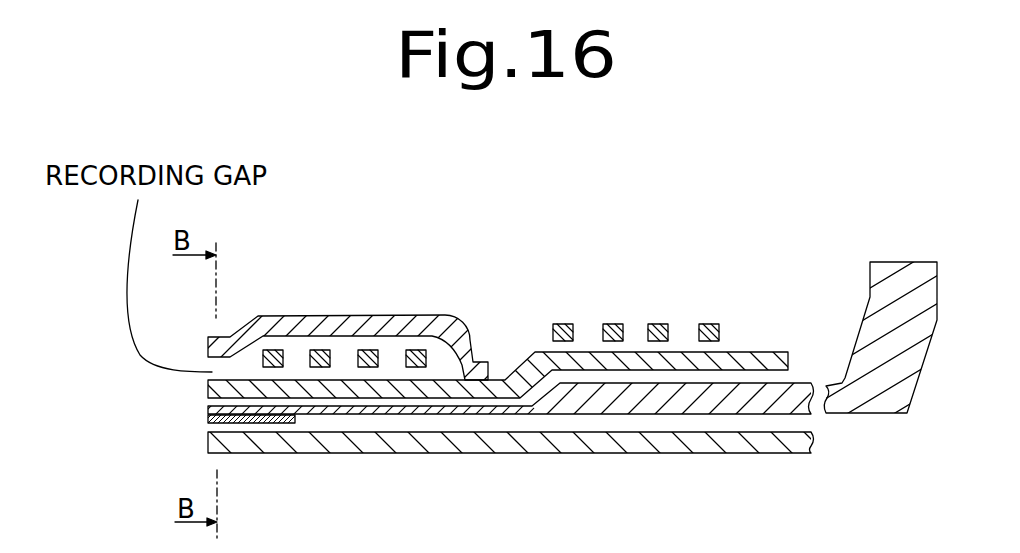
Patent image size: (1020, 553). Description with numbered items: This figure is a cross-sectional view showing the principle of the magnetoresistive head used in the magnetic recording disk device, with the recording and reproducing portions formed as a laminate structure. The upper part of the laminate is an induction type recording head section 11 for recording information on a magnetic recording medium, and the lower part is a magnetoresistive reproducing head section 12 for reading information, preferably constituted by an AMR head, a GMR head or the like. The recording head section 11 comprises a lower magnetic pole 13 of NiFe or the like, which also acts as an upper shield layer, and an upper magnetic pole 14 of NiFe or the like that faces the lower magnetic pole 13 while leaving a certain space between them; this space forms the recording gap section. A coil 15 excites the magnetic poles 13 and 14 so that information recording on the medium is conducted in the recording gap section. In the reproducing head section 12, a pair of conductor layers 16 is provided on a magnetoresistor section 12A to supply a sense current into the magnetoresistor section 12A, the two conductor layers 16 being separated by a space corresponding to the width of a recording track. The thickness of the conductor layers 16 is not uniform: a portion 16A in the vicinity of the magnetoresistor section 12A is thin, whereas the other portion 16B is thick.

The induction type recording head section 11 is at (208, 345).
The magnetoresistive reproducing head section 12 is at (206, 429).
The magnetoresistor section 12A is at (293, 424).
The lower magnetic pole 13 is at (527, 347).
The upper magnetic pole 14 is at (323, 315).
The coil 15 is at (366, 350).
The conductor layers 16 is at (767, 413).
The portion of conductor layer near the magnetoresistor section 16A is at (385, 413).
The other portion of conductor layer 16B is at (643, 403).